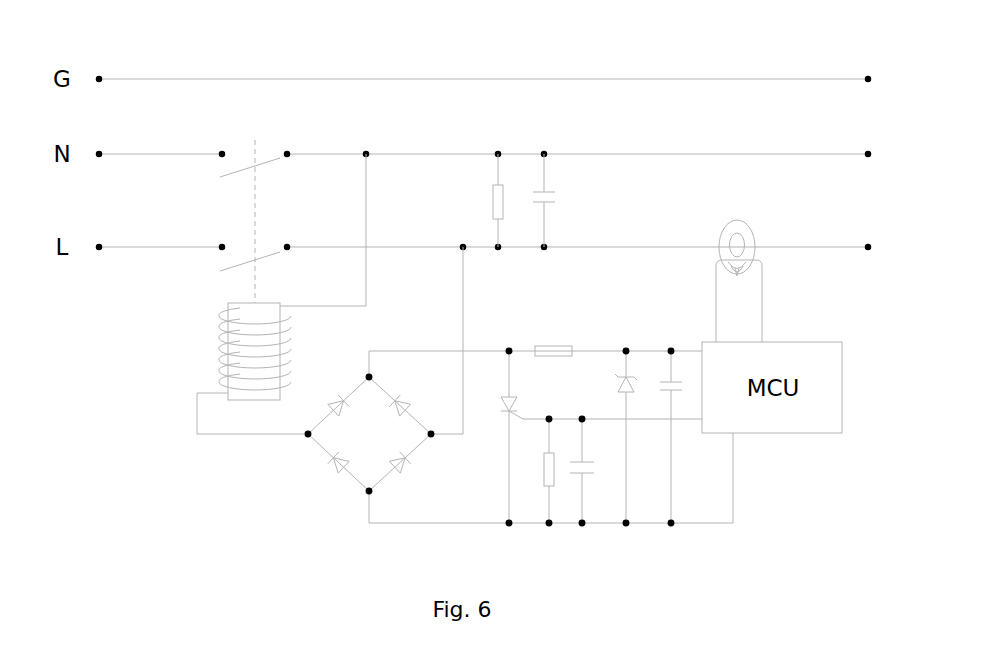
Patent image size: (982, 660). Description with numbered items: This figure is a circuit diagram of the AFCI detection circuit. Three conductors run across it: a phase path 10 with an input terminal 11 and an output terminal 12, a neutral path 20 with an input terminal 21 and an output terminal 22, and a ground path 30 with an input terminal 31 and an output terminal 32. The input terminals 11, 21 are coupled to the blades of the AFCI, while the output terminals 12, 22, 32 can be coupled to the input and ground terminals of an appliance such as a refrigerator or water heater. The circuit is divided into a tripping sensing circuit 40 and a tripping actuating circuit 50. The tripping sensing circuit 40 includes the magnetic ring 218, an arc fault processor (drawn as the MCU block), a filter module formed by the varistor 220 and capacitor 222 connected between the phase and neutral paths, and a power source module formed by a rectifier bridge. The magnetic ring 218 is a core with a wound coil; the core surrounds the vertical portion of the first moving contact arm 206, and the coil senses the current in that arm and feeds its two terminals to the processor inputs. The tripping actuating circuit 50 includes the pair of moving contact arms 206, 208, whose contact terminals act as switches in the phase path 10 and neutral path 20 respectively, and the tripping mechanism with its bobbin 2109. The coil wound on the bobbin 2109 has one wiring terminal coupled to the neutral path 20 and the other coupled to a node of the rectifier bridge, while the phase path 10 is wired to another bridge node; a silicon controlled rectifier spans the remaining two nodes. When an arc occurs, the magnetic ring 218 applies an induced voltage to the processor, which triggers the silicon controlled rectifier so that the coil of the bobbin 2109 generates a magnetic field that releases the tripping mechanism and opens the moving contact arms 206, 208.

The phase path 10 is at (347, 247).
The input terminal 11 is at (99, 247).
The output terminal 12 is at (868, 247).
The neutral path 20 is at (333, 153).
The input terminal 21 is at (99, 154).
The output terminal 22 is at (868, 154).
The ground path 30 is at (333, 79).
The input terminal 31 is at (99, 79).
The output terminal 32 is at (868, 79).
The tripping sensing circuit 40 is at (562, 170).
The tripping actuating circuit 50 is at (192, 284).
The first moving contact arm 206 is at (247, 257).
The moving contact arm 208 is at (270, 158).
The magnetic ring 218 is at (740, 230).
The varistor 220 is at (497, 200).
The capacitor 222 is at (555, 200).
The bobbin 2109 is at (224, 349).